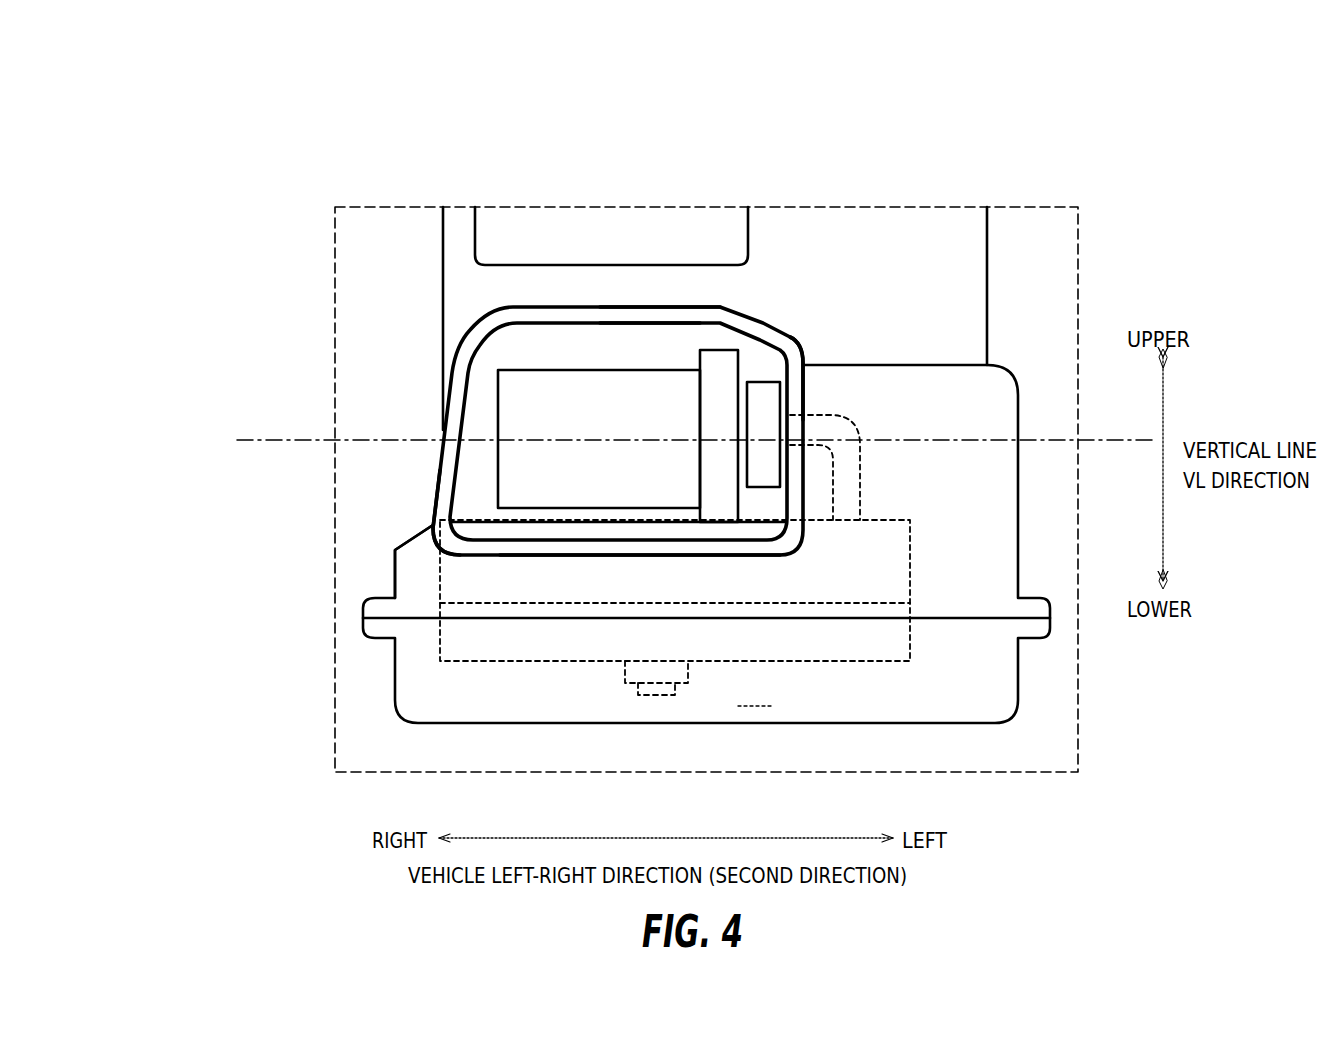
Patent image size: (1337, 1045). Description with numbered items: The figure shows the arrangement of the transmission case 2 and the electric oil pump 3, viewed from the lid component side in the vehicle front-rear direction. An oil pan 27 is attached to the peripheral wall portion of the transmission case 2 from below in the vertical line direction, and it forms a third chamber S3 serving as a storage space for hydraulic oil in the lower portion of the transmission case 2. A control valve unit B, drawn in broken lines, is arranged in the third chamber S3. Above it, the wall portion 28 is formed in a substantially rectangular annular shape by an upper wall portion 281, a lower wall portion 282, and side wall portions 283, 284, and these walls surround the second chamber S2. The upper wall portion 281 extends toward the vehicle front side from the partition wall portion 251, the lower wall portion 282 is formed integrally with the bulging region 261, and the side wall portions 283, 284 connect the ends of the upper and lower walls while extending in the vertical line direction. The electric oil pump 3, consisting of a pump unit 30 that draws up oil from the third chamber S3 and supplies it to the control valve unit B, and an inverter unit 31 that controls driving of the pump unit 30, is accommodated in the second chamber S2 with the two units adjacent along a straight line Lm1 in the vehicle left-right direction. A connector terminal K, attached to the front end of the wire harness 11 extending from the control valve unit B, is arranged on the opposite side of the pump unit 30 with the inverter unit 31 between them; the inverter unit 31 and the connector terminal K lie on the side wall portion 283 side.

The transmission case 2 is at (1020, 168).
The electric oil pump 3 is at (592, 284).
The pump unit 30 is at (527, 387).
The inverter unit 31 is at (708, 315).
The wall portion 28 is at (541, 300).
The upper wall portion 281 is at (663, 317).
The lower wall portion 282 is at (628, 543).
The side wall portion 283 is at (795, 355).
The side wall portion 284 is at (447, 497).
The second chamber S2 is at (594, 340).
The third chamber S3 is at (755, 689).
The connector terminal K is at (767, 397).
The wire harness 11 is at (840, 432).
The partition wall portion 251 is at (463, 294).
The bulging region 261 is at (413, 572).
The oil pan 27 is at (1018, 672).
The control valve unit B is at (914, 561).
The straight line Lm1 is at (668, 439).